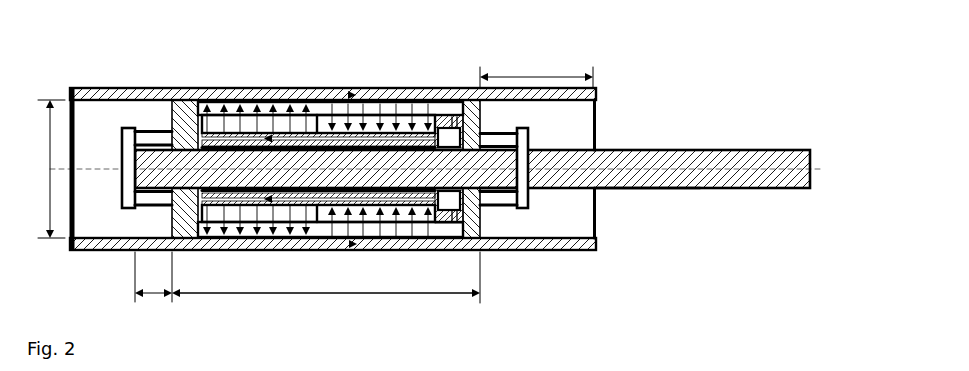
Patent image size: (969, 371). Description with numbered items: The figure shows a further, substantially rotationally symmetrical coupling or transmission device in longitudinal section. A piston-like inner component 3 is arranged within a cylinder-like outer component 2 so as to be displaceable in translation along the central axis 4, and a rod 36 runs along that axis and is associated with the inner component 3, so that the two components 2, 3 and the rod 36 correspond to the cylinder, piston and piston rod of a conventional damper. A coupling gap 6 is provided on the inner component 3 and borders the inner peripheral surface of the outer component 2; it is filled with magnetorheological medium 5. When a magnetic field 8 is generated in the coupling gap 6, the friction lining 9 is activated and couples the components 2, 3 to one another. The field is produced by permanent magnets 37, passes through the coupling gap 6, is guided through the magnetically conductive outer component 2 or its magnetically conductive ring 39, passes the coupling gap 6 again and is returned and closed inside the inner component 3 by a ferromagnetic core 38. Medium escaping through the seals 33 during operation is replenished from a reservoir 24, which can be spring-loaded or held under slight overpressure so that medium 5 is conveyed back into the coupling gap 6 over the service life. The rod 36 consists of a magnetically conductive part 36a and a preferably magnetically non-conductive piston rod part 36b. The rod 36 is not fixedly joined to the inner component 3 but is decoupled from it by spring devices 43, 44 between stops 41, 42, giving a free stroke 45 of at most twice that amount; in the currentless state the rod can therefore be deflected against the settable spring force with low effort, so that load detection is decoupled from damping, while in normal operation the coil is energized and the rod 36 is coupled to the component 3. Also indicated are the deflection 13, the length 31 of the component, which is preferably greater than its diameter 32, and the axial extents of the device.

The outer component 2 is at (120, 87).
The inner component 3 is at (172, 122).
The central axis 4 is at (817, 167).
The magnetorheological medium 5 is at (405, 107).
The coupling gap 6 is at (323, 110).
The magnetic field 8 is at (245, 122).
The friction lining 9 is at (297, 107).
The deflection 13 is at (530, 72).
The reservoir 24 is at (445, 128).
The length 31 is at (353, 302).
The diameter 32 is at (52, 147).
The seal 33 is at (486, 105).
The rod 36 is at (708, 160).
The magnetically conductive part 36a is at (485, 176).
The magnetically non-conductive part 36b is at (643, 190).
The permanent magnet 37 is at (213, 123).
The core 38 is at (365, 127).
The ring 39 is at (372, 251).
The stop 41 is at (122, 193).
The stop 42 is at (530, 194).
The spring element 43 is at (122, 135).
The spring element 44 is at (503, 208).
The free stroke 45 is at (150, 296).